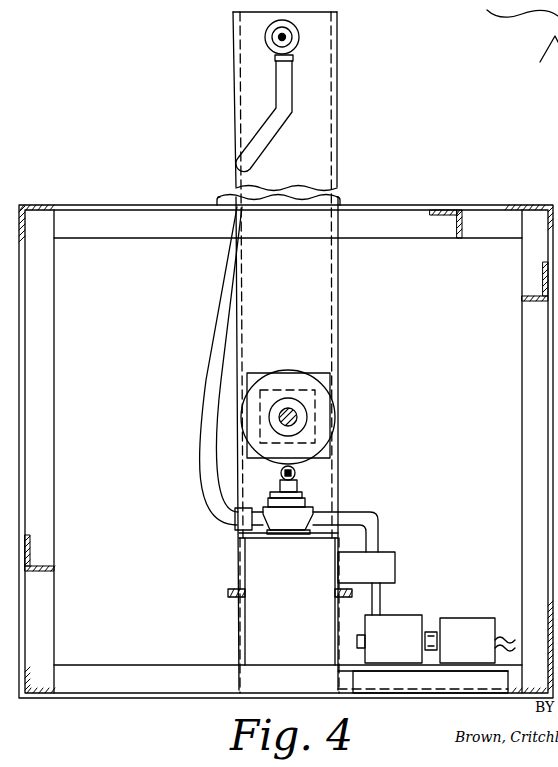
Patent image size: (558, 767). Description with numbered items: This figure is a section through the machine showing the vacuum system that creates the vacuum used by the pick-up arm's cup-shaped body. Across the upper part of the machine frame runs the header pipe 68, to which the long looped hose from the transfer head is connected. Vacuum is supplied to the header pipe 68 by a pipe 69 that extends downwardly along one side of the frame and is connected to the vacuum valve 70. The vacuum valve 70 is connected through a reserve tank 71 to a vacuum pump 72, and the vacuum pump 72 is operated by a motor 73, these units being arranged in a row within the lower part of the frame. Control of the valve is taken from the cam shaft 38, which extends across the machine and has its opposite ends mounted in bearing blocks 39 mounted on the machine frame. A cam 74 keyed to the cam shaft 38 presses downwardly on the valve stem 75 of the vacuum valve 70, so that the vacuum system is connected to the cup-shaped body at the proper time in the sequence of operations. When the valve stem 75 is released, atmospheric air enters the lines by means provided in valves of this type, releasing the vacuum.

The header pipe 68 is at (298, 28).
The pipe 69 is at (238, 163).
The cam 74 is at (322, 383).
The cam shaft 38 is at (300, 413).
The bearing blocks 39 is at (319, 423).
The valve stem 75 is at (298, 487).
The vacuum valve 70 is at (297, 520).
The reserve tank 71 is at (380, 560).
The vacuum pump 72 is at (404, 600).
The motor 73 is at (472, 600).